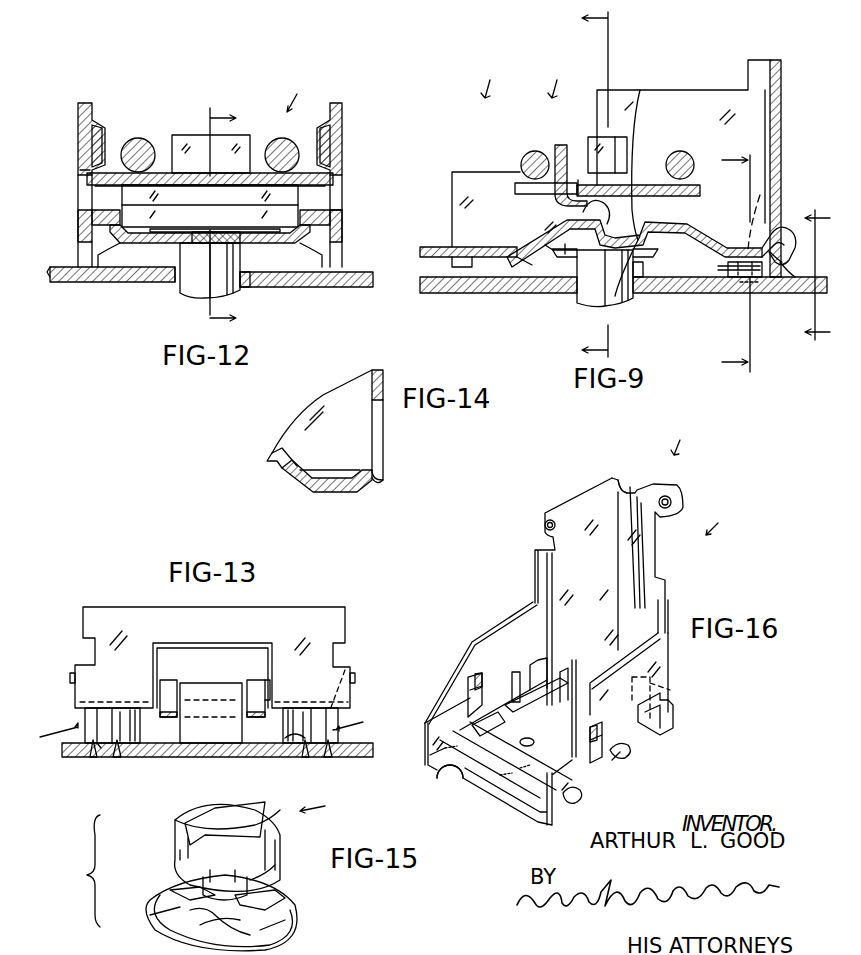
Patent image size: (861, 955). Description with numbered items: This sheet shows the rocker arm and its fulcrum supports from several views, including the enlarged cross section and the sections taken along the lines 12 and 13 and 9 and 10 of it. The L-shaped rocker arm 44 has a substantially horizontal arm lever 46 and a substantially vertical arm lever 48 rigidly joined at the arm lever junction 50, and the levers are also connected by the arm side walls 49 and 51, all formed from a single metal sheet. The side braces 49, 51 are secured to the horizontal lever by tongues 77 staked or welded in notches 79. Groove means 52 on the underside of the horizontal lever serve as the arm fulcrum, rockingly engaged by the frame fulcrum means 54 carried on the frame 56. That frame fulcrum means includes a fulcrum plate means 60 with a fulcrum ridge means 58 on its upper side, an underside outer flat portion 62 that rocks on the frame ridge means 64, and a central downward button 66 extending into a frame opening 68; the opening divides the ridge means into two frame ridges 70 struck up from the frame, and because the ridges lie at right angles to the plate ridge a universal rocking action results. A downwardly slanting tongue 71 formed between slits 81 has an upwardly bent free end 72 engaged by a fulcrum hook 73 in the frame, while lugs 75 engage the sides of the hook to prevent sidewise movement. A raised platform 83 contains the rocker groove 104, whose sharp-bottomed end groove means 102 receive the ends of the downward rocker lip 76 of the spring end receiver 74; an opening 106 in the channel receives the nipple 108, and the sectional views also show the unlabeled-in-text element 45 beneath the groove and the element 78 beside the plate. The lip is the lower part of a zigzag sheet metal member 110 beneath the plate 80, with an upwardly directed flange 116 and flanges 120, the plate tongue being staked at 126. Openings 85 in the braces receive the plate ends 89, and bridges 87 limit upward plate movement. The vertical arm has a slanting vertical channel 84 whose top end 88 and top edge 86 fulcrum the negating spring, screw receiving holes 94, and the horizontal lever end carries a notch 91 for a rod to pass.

In FIG. 12, the section line 9- 9 is at (233, 218).
In FIG. 9, the section line 10- 10 is at (723, 265).
In FIG. 9, the section line 12- 12 is at (613, 186).
In FIG. 9, the section line 13- 13 is at (799, 270).
In FIG. 16, the rocker arm 44 is at (687, 435).
In FIG. 12, the bolt 45 is at (190, 298).
In FIG. 9, the bolt 45 is at (585, 310).
In FIG. 9, the horizontal arm lever 46 is at (483, 79).
In FIG. 16, the horizontal arm lever 46 is at (489, 823).
In FIG. 9, the vertical arm lever 48 is at (785, 62).
In FIG. 14, the vertical arm lever 48 is at (380, 370).
In FIG. 13, the vertical arm lever 48 is at (252, 615).
In FIG. 16, the vertical arm lever 48 is at (724, 519).
In FIG. 12, the arm side wall 49 is at (338, 108).
In FIG. 9, the arm side wall 49 is at (707, 92).
In FIG. 14, the arm side wall 49 is at (325, 400).
In FIG. 16, the arm side wall 49 is at (515, 620).
In FIG. 14, the arm lever junction 50 is at (383, 483).
In FIG. 12, the arm side wall 51 is at (78, 106).
In FIG. 16, the arm side wall 51 is at (655, 662).
In FIG. 13, the groove means 52 is at (73, 708).
In FIG. 16, the groove means 52 is at (660, 730).
In FIG. 9, the frame fulcrum means 54 is at (735, 293).
In FIG. 13, the frame fulcrum means 54 is at (207, 727).
In FIG. 15, the frame fulcrum means 54 is at (327, 808).
In FIG. 12, the frame 56 is at (296, 286).
In FIG. 9, the frame 56 is at (450, 295).
In FIG. 13, the frame 56 is at (72, 755).
In FIG. 15, the frame 56 is at (152, 890).
In FIG. 13, the fulcrum ridge means 58 is at (123, 711).
In FIG. 15, the fulcrum ridge means 58 is at (203, 808).
In FIG. 9, the fulcrum plate means 60 is at (718, 268).
In FIG. 15, the fulcrum plate means 60 is at (281, 833).
In FIG. 13, the underside outer flat portion 62 is at (95, 748).
In FIG. 15, the underside outer flat portion 62 is at (270, 873).
In FIG. 13, the frame ridge means 64 is at (108, 713).
In FIG. 15, the frame ridge means 64 is at (190, 890).
In FIG. 13, the central downward button 66 is at (135, 727).
In FIG. 15, the central downward button 66 is at (221, 888).
In FIG. 15, the frame opening 68 is at (190, 920).
In FIG. 13, the frame ridge 70 is at (110, 748).
In FIG. 15, the frame ridge 70 is at (150, 915).
In FIG. 9, the downwardly slanting tongue 71 is at (625, 234).
In FIG. 14, the downwardly slanting tongue 71 is at (316, 494).
In FIG. 13, the downwardly slanting tongue 71 is at (205, 696).
In FIG. 16, the downwardly slanting tongue 71 is at (560, 700).
In FIG. 9, the upwardly bent free end 72 is at (773, 263).
In FIG. 13, the upwardly bent free end 72 is at (275, 685).
In FIG. 16, the upwardly bent free end 72 is at (578, 700).
In FIG. 9, the fulcrum hook 73 is at (733, 236).
In FIG. 13, the fulcrum hook 73 is at (228, 670).
In FIG. 12, the spring end receiver 74 is at (300, 90).
In FIG. 9, the spring end receiver 74 is at (553, 79).
In FIG. 9, the lugs 75 is at (768, 197).
In FIG. 13, the lugs 75 is at (170, 680).
In FIG. 16, the lugs 75 is at (580, 700).
In FIG. 12, the downward rocker lip 76 is at (296, 213).
In FIG. 9, the downward rocker lip 76 is at (632, 186).
In FIG. 13, the tongue 77 is at (70, 677).
In FIG. 16, the tongue 77 is at (632, 752).
In FIG. 12, the ball bearing 78 is at (138, 140).
In FIG. 9, the ball bearing 78 is at (532, 151).
In FIG. 16, the notch 79 is at (613, 765).
In FIG. 12, the plate 80 is at (288, 140).
In FIG. 9, the plate 80 is at (680, 165).
In FIG. 16, the slit 81 is at (554, 690).
In FIG. 9, the raised platform 83 is at (670, 257).
In FIG. 14, the raised platform 83 is at (272, 471).
In FIG. 16, the raised platform 83 is at (508, 705).
In FIG. 16, the slanting vertical channel 84 is at (632, 567).
In FIG. 12, the opening 85 is at (88, 172).
In FIG. 9, the opening 85 is at (580, 180).
In FIG. 16, the opening 85 is at (470, 703).
In FIG. 16, the top edge 86 is at (630, 488).
In FIG. 12, the bridge 87 is at (95, 148).
In FIG. 9, the bridge 87 is at (595, 138).
In FIG. 16, the bridge 87 is at (470, 690).
In FIG. 16, the top end 88 is at (633, 500).
In FIG. 12, the plate end 89 is at (88, 180).
In FIG. 16, the notch 91 is at (450, 785).
In FIG. 16, the screw receiving hole 94 is at (670, 499).
In FIG. 12, the rocker groove means 102 is at (117, 227).
In FIG. 9, the rocker groove means 102 is at (607, 272).
In FIG. 16, the rocker groove means 102 is at (470, 738).
In FIG. 12, the rocker groove 104 is at (145, 242).
In FIG. 9, the rocker groove 104 is at (553, 263).
In FIG. 16, the rocker groove 104 is at (545, 782).
In FIG. 12, the opening 106 is at (247, 287).
In FIG. 9, the opening 106 is at (640, 278).
In FIG. 16, the opening 106 is at (522, 746).
In FIG. 12, the nipple 108 is at (211, 227).
In FIG. 9, the zigzag sheet metal member 110 is at (510, 200).
In FIG. 12, the upwardly directed flange 116 is at (198, 130).
In FIG. 9, the upwardly directed flange 116 is at (560, 145).
In FIG. 9, the flange 120 is at (640, 90).
In FIG. 9, the staking 126 is at (560, 223).